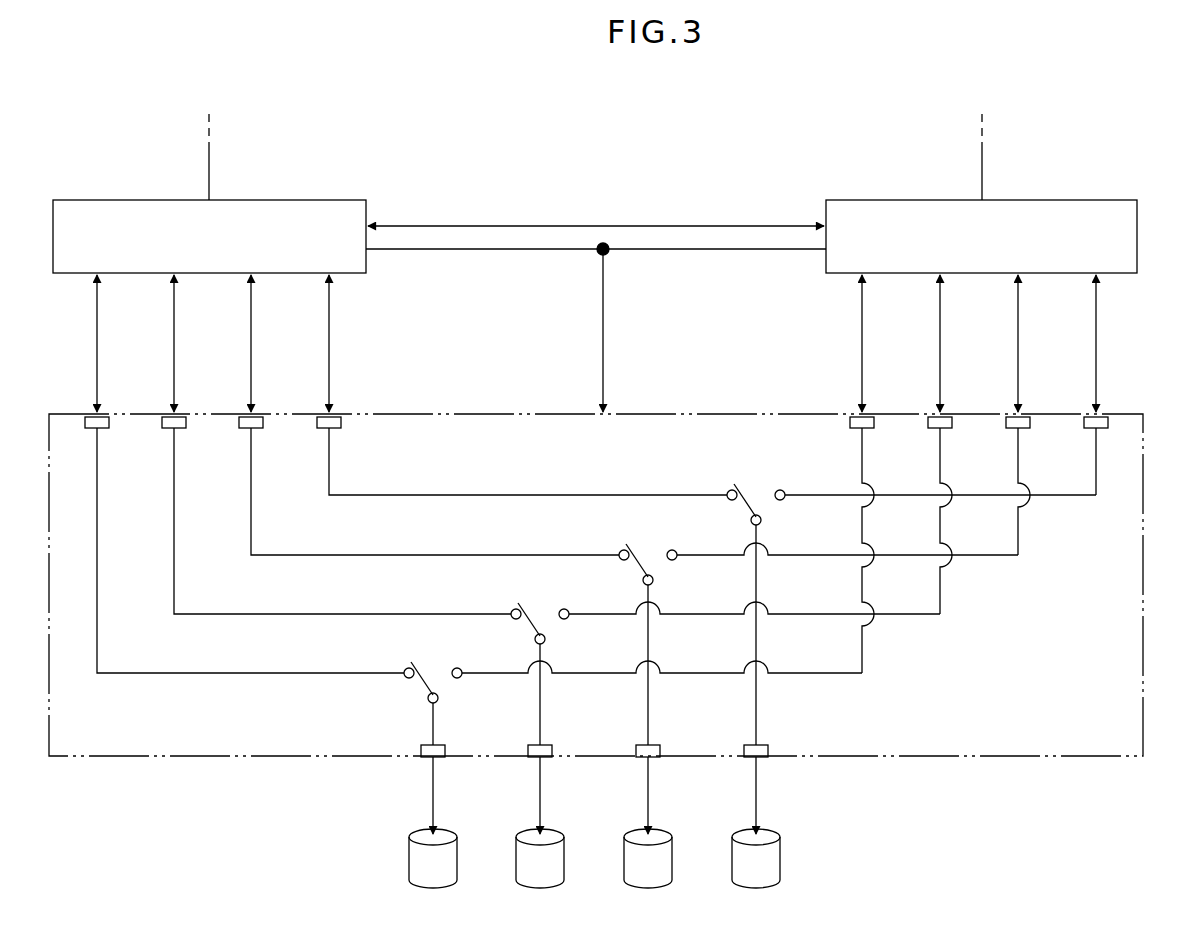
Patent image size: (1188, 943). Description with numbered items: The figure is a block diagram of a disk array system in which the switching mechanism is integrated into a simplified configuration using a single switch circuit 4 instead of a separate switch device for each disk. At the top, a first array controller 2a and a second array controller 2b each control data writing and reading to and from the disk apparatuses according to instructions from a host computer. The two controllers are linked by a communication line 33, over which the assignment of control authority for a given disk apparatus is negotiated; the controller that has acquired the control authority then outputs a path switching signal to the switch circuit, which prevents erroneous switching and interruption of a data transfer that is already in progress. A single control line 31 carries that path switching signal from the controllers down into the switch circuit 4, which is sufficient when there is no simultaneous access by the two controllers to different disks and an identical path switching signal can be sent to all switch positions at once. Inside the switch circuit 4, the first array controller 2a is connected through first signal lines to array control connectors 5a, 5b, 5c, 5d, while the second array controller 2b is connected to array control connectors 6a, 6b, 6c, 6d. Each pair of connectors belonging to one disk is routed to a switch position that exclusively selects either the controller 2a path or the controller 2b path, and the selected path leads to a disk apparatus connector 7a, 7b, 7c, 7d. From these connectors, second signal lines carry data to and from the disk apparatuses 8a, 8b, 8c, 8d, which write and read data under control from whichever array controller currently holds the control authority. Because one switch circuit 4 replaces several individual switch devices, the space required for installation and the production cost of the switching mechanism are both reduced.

The array controller 2a is at (312, 200).
The array controller 2b is at (1088, 200).
The switch circuit 4 is at (688, 412).
The array control connector 5a is at (105, 413).
The array control connector 5b is at (182, 413).
The array control connector 5c is at (259, 413).
The array control connector 5d is at (337, 413).
The array control connector 6a is at (870, 413).
The array control connector 6b is at (948, 413).
The array control connector 6c is at (1026, 413).
The array control connector 6d is at (1104, 413).
The disk apparatus connector 7a is at (425, 758).
The disk apparatus connector 7b is at (532, 758).
The disk apparatus connector 7c is at (640, 758).
The disk apparatus connector 7d is at (748, 758).
The disk apparatus 8a is at (420, 858).
The disk apparatus 8b is at (527, 858).
The disk apparatus 8c is at (635, 858).
The disk apparatus 8d is at (743, 858).
The control line 31 is at (545, 251).
The communication line 33 is at (650, 222).